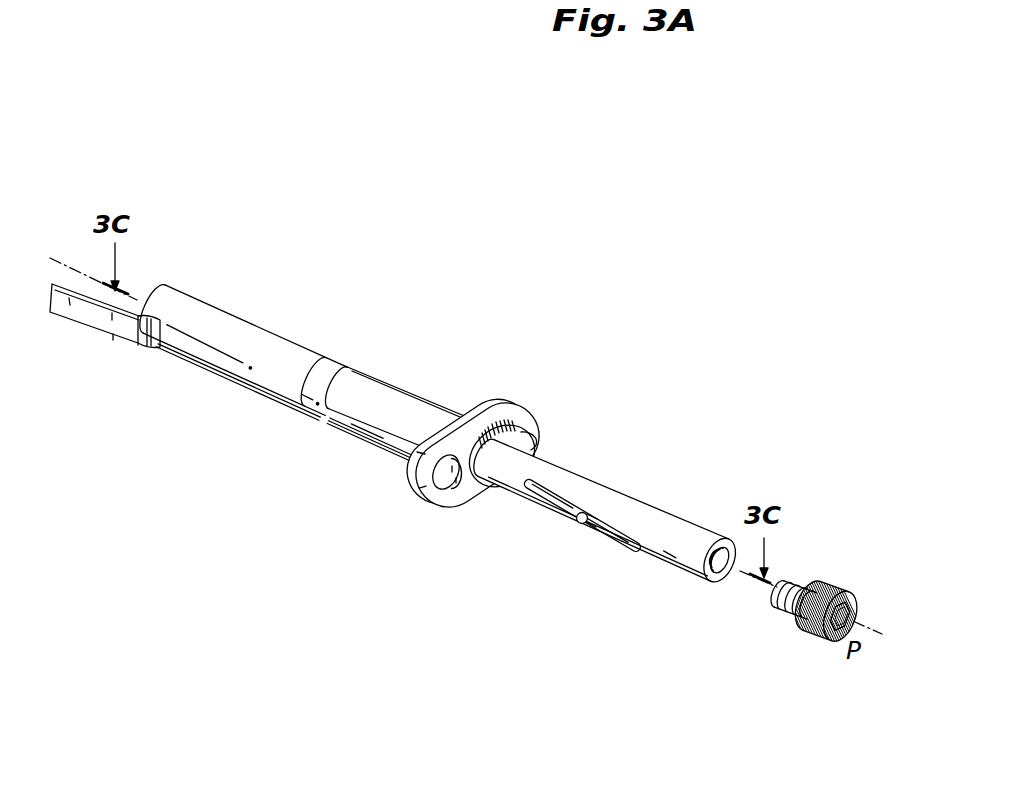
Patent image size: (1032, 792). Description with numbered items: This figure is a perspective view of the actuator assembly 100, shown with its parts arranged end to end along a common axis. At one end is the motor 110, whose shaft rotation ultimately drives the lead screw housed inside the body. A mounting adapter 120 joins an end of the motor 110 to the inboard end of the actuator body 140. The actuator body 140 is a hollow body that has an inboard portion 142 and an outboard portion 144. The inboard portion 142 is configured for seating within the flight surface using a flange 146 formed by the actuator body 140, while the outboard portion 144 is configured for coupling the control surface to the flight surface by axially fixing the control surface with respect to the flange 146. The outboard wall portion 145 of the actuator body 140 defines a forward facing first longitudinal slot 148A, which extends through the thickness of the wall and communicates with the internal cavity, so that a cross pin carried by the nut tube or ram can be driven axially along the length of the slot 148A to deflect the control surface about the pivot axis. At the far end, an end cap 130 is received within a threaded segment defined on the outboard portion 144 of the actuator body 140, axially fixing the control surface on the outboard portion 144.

The actuator assembly 100 is at (570, 231).
The motor 110 is at (224, 288).
The mounting adapter 120 is at (340, 333).
The end cap 130 is at (799, 632).
The actuator body 140 is at (521, 383).
The inboard portion 142 is at (363, 432).
The outboard portion 144 is at (688, 578).
The outboard wall portion 145 is at (547, 497).
The flange 146 is at (410, 500).
The first longitudinal slot 148A is at (640, 529).